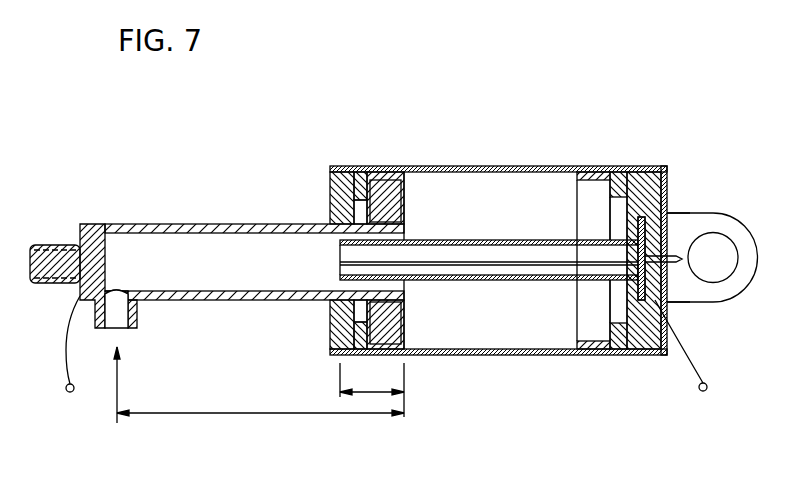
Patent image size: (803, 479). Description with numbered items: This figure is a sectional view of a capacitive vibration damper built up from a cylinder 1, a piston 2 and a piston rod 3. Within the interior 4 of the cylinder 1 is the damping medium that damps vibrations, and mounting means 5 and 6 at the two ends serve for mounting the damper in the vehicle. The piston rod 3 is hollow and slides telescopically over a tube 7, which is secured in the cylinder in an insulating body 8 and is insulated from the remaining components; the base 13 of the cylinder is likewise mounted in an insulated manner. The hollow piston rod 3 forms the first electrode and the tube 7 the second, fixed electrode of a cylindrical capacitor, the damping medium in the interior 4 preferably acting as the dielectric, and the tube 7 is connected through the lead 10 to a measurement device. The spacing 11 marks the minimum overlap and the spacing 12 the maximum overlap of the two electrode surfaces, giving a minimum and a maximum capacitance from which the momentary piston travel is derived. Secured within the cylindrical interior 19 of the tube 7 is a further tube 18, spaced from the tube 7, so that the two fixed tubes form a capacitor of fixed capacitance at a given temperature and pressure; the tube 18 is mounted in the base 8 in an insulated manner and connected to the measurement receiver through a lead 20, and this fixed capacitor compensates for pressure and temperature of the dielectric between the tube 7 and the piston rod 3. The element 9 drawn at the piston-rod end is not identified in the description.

The cylinder 1 is at (441, 168).
The piston 2 is at (383, 190).
The piston rod 3 is at (170, 224).
The interior of the cylinder 4 is at (485, 190).
The mounting means 5 is at (47, 245).
The mounting means 6 is at (717, 214).
The tube 7 is at (520, 238).
The insulating body 8 is at (640, 180).
The electrical lead 9 is at (66, 393).
The lead 10 is at (700, 392).
The spacing 11 is at (380, 392).
The spacing 12 is at (259, 385).
The base of the cylinder 13 is at (680, 218).
The further tube 18 is at (553, 247).
The cylindrical interior of the tube 19 is at (588, 247).
The lead 20 is at (668, 262).